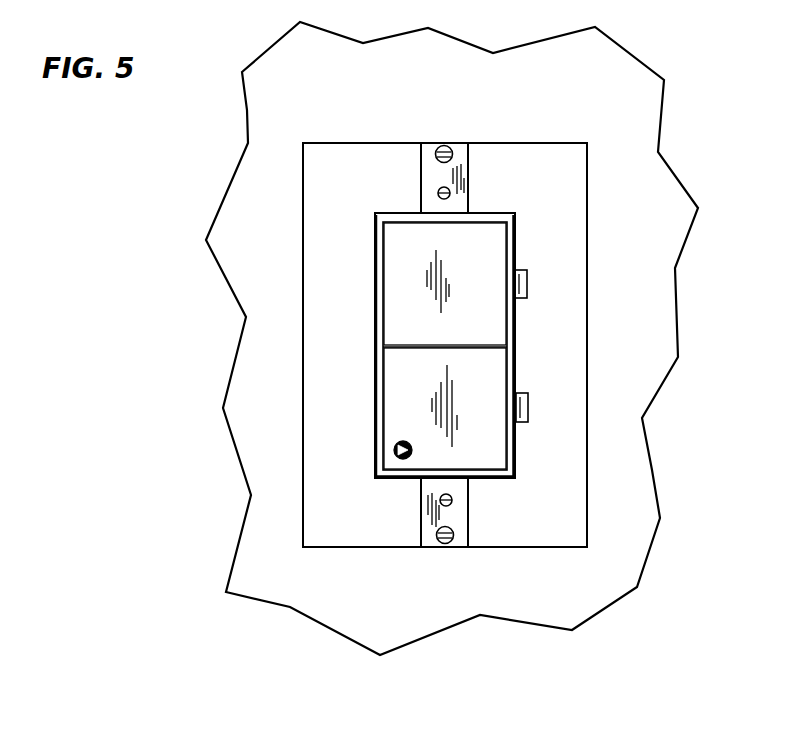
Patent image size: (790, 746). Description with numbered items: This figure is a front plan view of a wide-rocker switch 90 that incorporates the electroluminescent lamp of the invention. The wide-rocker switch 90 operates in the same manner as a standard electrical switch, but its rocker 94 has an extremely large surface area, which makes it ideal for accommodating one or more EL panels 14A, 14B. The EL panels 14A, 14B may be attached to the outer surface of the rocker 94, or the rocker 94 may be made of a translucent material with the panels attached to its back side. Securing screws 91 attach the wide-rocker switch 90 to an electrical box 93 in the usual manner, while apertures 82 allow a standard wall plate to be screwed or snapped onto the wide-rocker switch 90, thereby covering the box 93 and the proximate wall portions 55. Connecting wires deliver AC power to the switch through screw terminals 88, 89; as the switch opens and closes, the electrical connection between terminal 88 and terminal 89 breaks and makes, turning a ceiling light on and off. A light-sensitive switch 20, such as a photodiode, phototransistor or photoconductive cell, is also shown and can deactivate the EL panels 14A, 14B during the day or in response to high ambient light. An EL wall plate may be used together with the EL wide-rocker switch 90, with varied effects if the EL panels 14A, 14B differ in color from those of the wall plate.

The wall portions 55 is at (622, 72).
The electrical box 93 is at (588, 225).
The wide-rocker switch 90 is at (517, 230).
The rocker 94 is at (383, 290).
The EL panel 14A is at (393, 323).
The EL panel 14B is at (400, 385).
The screw terminal 88 is at (527, 284).
The screw terminal 89 is at (528, 407).
The securing screws 91 is at (440, 147).
The apertures 82 is at (438, 191).
The light-sensitive switch 20 is at (400, 459).